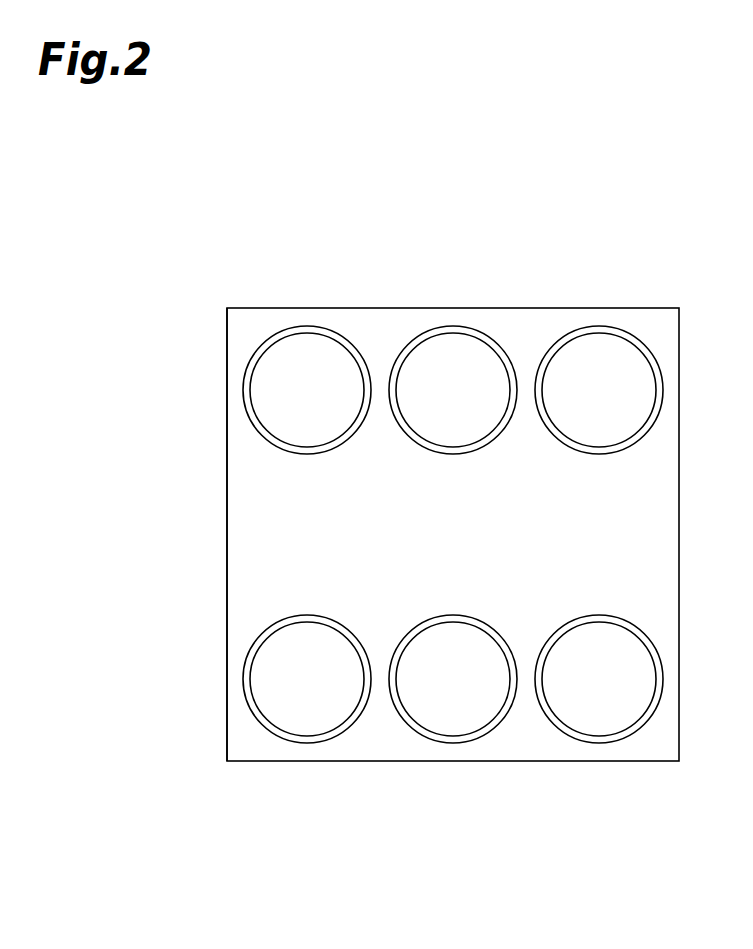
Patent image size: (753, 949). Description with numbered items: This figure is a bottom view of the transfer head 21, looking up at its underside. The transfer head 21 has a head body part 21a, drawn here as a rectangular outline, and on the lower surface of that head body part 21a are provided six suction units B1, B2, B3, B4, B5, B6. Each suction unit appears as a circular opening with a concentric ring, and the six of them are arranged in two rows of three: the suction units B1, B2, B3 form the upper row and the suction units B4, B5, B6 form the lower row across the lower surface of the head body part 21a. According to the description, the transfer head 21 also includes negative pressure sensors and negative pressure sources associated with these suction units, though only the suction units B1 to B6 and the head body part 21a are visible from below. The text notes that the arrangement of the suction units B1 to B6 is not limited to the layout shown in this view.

The transfer head 21 is at (226, 350).
The head body part 21a is at (226, 393).
The suction unit B1 is at (309, 326).
The suction unit B2 is at (455, 326).
The suction unit B3 is at (601, 326).
The suction unit B4 is at (307, 743).
The suction unit B5 is at (453, 743).
The suction unit B6 is at (599, 743).